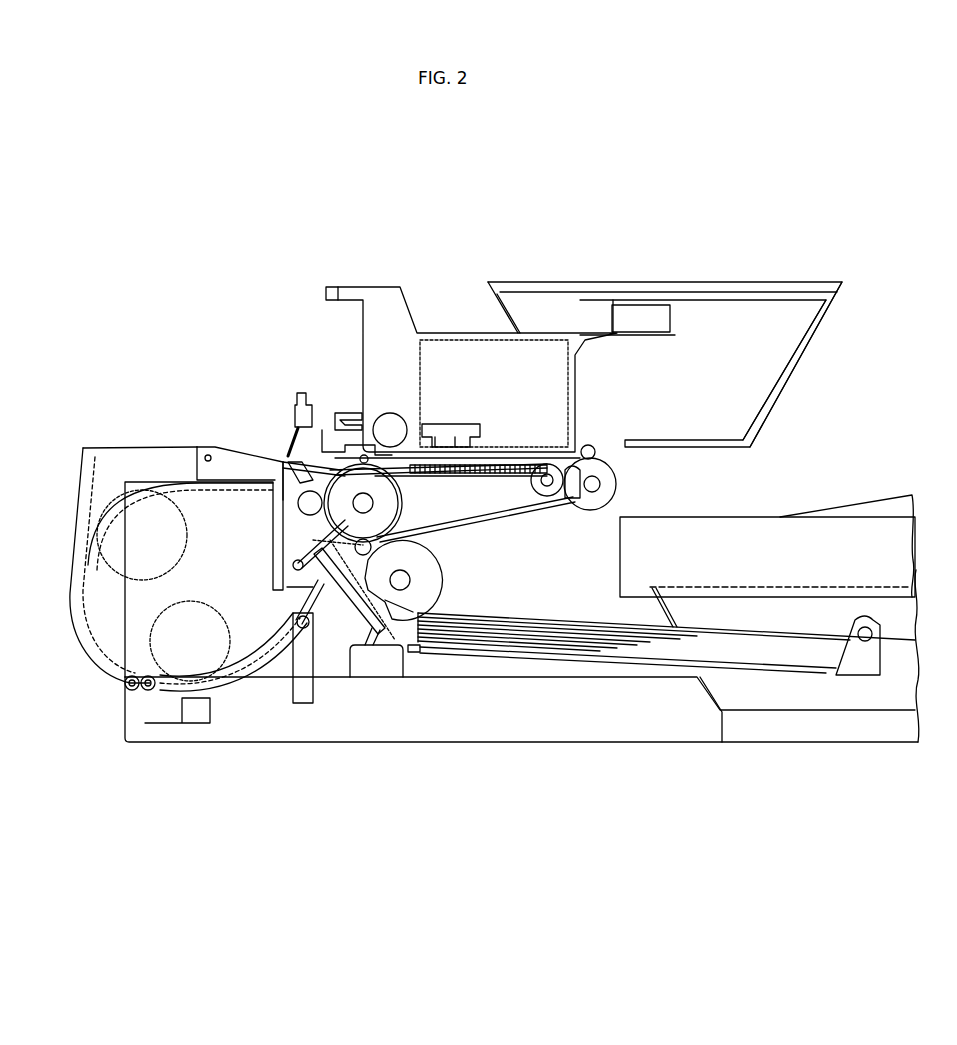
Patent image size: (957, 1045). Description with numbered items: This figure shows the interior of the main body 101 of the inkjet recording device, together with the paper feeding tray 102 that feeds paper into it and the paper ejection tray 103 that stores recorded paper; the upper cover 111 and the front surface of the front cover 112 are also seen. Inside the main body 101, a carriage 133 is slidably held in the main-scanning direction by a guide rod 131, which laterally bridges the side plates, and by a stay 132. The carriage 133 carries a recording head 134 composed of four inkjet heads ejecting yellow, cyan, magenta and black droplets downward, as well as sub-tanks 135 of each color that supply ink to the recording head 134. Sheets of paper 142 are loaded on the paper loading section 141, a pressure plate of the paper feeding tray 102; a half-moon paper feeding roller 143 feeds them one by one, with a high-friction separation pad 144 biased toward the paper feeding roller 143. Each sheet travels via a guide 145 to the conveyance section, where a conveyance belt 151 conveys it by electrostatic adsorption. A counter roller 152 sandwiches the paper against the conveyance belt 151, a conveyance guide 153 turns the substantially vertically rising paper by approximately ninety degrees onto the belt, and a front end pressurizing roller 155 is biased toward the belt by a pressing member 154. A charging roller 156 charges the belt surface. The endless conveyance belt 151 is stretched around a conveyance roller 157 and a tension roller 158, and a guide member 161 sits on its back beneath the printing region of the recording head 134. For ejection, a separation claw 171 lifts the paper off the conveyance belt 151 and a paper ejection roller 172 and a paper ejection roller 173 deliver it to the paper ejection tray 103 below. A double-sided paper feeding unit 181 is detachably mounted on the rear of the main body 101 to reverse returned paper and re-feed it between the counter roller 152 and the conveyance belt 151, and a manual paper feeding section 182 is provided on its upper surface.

The main body 101 is at (708, 207).
The paper feeding tray 102 is at (782, 716).
The paper ejection tray 103 is at (827, 537).
The upper cover 111 is at (733, 283).
The front surface of the front cover 112 is at (808, 350).
The guide rod 131 is at (388, 425).
The stay 132 is at (332, 285).
The carriage 133 is at (400, 314).
The recording head 134 is at (513, 453).
The sub-tank 135 is at (497, 353).
The paper loading section 141 is at (527, 650).
The sheets of paper 142 is at (580, 640).
The paper feeding roller 143 is at (400, 593).
The separation pad 144 is at (378, 625).
The guide 145 is at (340, 565).
The conveyance belt 151 is at (500, 512).
The counter roller 152 is at (247, 450).
The conveyance guide 153 is at (298, 484).
The pressing member 154 is at (297, 418).
The front end pressurizing roller 155 is at (338, 419).
The charging roller 156 is at (317, 582).
The conveyance roller 157 is at (390, 503).
The tension roller 158 is at (530, 481).
The guide member 161 is at (478, 469).
The separation claw 171 is at (577, 503).
The paper ejection roller 172 is at (614, 483).
The paper ejection roller 173 is at (592, 446).
The double-sided paper feeding unit 181 is at (100, 462).
The manual paper feeding section 182 is at (200, 437).